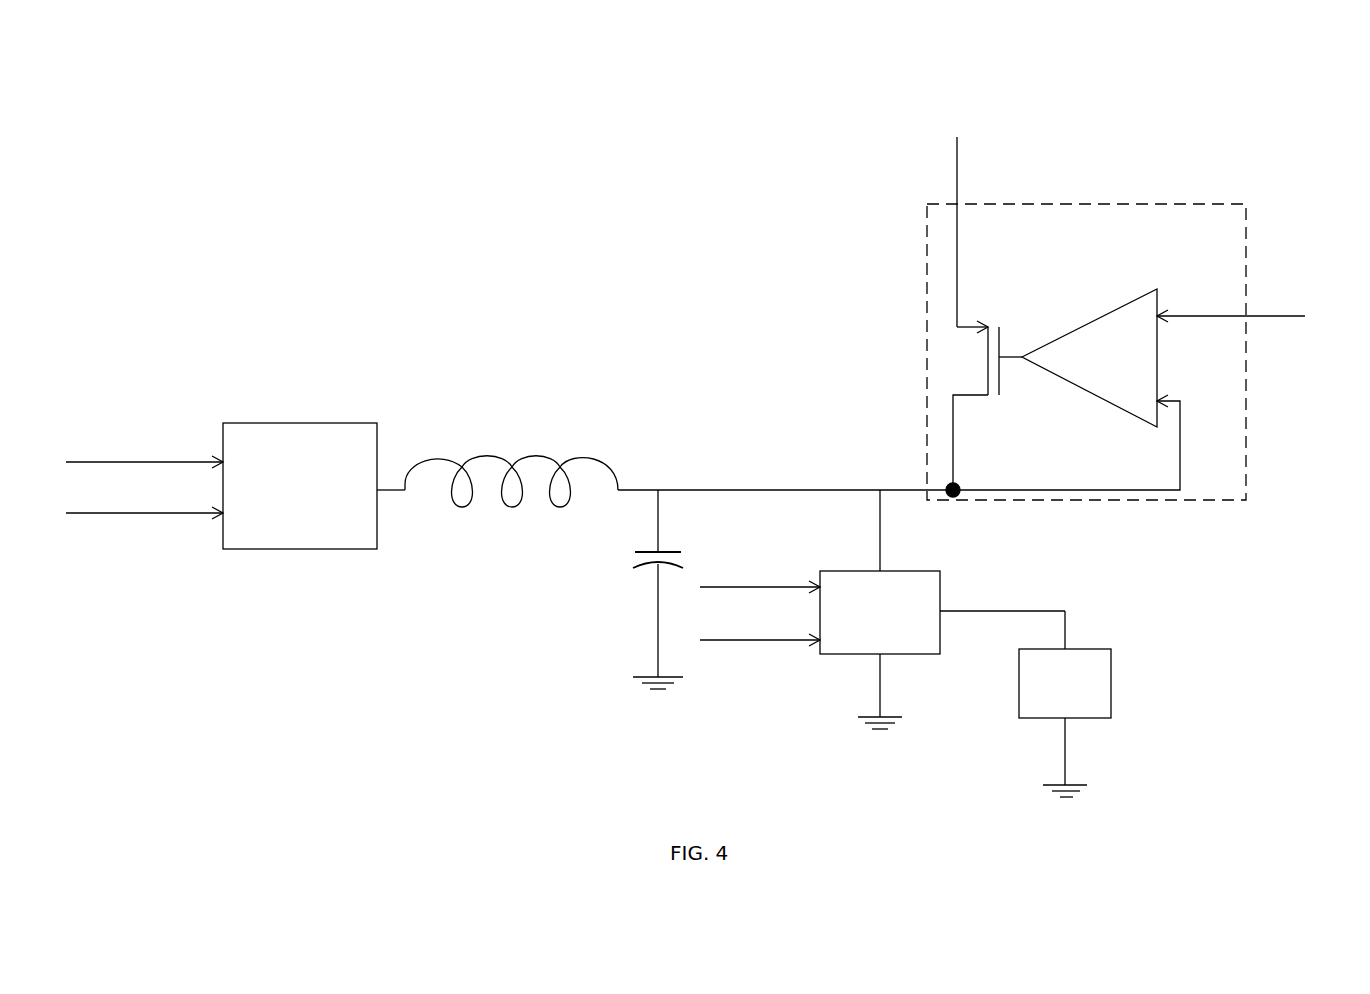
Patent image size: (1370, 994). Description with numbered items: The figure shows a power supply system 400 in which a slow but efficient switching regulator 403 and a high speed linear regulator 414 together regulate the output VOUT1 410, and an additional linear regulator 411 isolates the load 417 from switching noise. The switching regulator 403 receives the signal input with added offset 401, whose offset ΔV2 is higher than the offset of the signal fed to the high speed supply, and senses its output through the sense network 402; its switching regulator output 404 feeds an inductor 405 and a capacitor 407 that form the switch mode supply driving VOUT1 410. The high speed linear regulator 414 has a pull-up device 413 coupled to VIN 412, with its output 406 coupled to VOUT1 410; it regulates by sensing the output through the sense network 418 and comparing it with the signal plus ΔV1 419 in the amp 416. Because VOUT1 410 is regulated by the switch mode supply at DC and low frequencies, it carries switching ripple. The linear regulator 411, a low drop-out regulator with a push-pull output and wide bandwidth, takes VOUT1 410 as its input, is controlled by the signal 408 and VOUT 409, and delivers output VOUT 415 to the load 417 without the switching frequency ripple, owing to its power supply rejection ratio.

The power supply system 400 is at (1061, 86).
The signal input with added offset 401 is at (72, 462).
The sense network 402 is at (88, 517).
The switching regulator 403 is at (287, 423).
The switching regulator output 404 is at (390, 488).
The inductor 405 is at (507, 462).
The output of high speed supply 406 is at (953, 428).
The capacitor 407 is at (640, 567).
The signal 408 is at (710, 585).
The VOUT 409 is at (720, 640).
The output VOUT1 410 is at (863, 492).
The linear regulator 411 is at (934, 571).
The VIN 412 is at (956, 192).
The pull-up device 413 is at (970, 325).
The high speed linear regulator 414 is at (1053, 204).
The output VOUT 415 is at (1058, 604).
The amp 416 is at (1080, 325).
The load 417 is at (1111, 686).
The sense network 418 is at (1180, 422).
The signal plus ΔV1 419 is at (1262, 313).